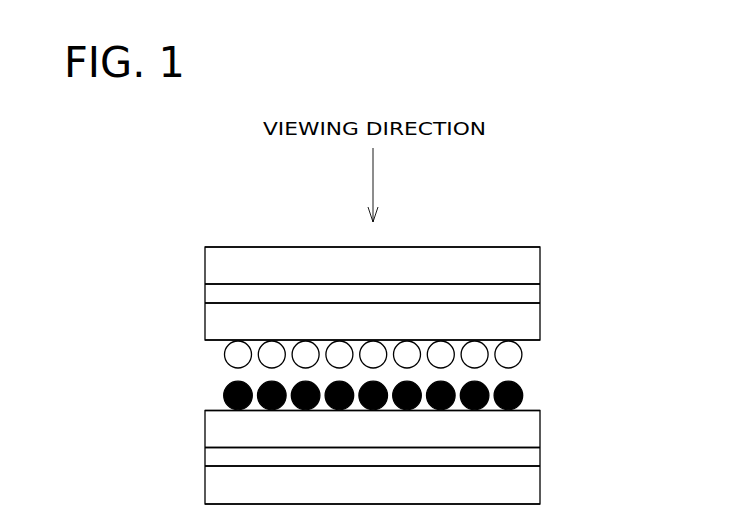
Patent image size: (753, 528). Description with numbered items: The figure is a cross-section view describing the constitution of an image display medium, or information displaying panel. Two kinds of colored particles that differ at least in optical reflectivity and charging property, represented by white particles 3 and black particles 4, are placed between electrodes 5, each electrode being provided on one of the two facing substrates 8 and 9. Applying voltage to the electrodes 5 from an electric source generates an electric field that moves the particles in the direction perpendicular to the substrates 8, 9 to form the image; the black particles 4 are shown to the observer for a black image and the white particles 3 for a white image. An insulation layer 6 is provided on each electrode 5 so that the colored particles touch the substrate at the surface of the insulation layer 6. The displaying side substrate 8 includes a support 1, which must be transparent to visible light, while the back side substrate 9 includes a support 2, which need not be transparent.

The support 1 is at (523, 264).
The support 2 is at (523, 491).
The white particles 3 is at (522, 356).
The black particles 4 is at (523, 395).
The electrode 5 is at (523, 294).
The insulation layer 6 is at (523, 323).
The substrate 8 is at (596, 247).
The substrate 9 is at (596, 415).